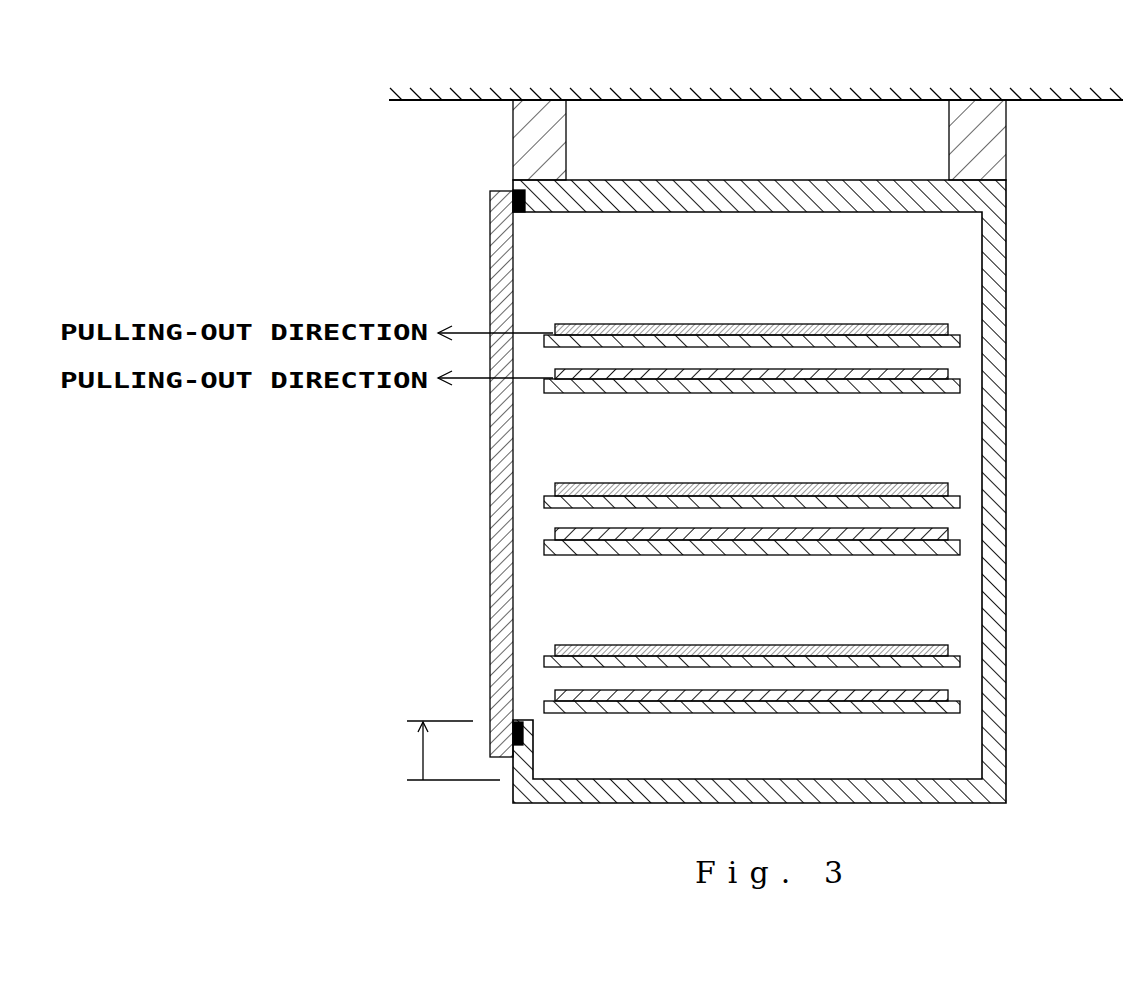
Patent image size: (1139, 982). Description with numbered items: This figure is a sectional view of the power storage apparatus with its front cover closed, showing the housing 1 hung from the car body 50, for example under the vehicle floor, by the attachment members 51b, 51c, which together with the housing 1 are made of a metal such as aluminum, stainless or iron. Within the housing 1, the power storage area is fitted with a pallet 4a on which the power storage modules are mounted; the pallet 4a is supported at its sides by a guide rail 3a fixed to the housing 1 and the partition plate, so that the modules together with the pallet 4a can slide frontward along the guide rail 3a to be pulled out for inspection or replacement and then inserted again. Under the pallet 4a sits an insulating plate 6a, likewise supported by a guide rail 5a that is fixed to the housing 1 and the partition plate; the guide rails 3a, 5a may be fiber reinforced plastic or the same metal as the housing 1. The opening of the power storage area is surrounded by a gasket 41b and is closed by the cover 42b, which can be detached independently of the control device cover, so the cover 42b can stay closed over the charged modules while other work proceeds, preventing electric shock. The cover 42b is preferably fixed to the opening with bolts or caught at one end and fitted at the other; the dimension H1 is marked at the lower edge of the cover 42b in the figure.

The housing 1 is at (787, 178).
The guide rail 3a is at (960, 341).
The pallet 4a is at (948, 328).
The guide rail 5a is at (960, 386).
The insulating plate 6a is at (948, 373).
The gasket 41b is at (514, 192).
The cover 42b is at (490, 231).
The car body 50 is at (917, 98).
The attachment member 51b is at (566, 141).
The attachment member 51c is at (1006, 153).
The height dimension H1 is at (447, 750).